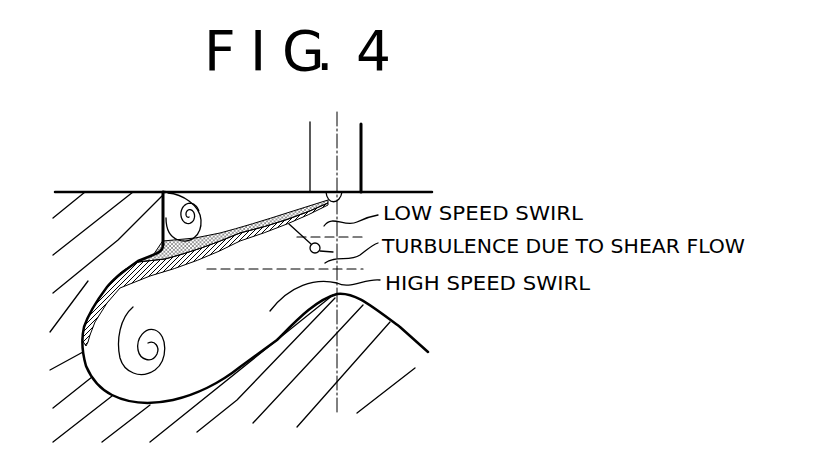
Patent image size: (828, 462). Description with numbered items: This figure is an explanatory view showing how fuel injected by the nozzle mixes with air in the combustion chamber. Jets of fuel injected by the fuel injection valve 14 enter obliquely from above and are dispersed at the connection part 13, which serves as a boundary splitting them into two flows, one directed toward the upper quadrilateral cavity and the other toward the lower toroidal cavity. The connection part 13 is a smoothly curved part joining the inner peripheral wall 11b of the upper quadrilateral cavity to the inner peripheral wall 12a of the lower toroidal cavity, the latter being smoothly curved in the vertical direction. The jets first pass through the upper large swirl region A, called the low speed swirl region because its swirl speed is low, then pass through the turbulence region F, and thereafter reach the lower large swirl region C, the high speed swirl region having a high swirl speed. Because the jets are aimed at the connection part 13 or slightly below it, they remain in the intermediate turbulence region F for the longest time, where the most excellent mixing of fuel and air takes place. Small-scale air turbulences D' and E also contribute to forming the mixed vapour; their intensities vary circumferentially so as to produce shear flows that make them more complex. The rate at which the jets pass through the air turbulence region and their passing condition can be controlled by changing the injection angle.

The inner peripheral wall of the upper quadrilateral cavity 11b is at (167, 195).
The connection part 13 is at (157, 248).
The fuel injection valve 14 is at (362, 163).
The inner peripheral wall of the lower toroidal cavity 12a is at (87, 341).
The low speed swirl region A is at (251, 200).
The small-scale turbulence E is at (203, 212).
The turbulence region F is at (270, 248).
The high speed swirl region C is at (233, 345).
The small-scale turbulence D' is at (165, 340).